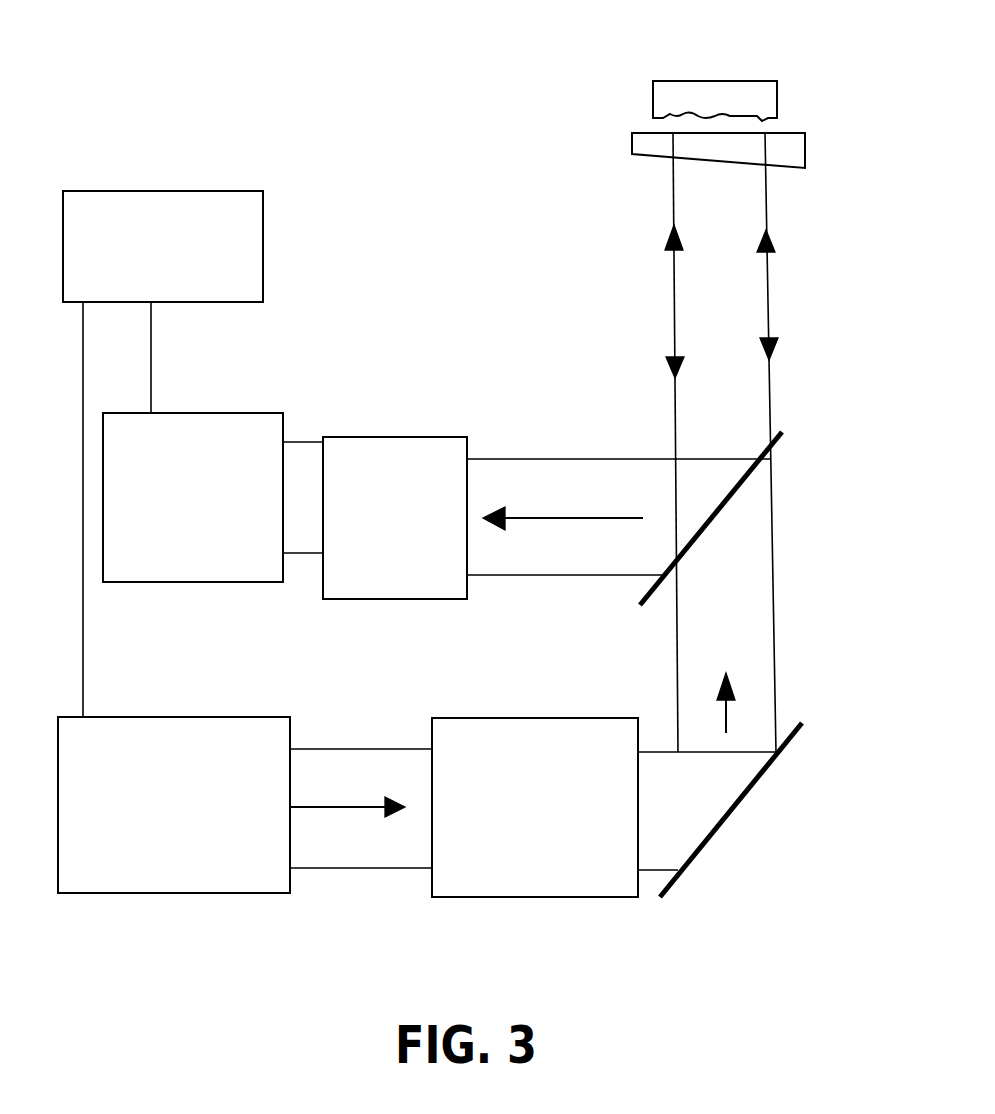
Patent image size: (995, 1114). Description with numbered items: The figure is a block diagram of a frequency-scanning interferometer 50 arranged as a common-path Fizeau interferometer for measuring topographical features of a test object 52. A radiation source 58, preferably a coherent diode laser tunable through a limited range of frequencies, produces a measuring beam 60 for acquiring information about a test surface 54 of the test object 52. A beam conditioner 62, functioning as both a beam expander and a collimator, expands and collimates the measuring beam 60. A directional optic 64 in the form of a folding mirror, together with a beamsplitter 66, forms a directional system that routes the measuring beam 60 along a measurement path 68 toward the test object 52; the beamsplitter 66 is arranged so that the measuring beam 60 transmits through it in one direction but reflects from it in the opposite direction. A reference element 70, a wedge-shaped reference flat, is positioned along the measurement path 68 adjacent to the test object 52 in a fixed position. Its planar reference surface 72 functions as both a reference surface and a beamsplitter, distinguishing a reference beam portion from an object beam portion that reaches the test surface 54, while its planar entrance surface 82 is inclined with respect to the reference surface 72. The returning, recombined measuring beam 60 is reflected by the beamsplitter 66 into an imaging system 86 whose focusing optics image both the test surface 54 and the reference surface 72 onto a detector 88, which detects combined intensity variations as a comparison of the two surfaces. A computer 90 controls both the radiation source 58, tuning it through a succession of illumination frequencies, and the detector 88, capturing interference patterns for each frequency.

The frequency-scanning interferometer 50 is at (240, 96).
The test object 52 is at (727, 92).
The test surface 54 is at (762, 120).
The radiation source 58 is at (174, 805).
The measuring beam 60 is at (315, 807).
The beam conditioner 62 is at (535, 807).
The directional optic 64 is at (728, 810).
The beamsplitter 66 is at (773, 443).
The measurement path 68 is at (721, 442).
The reference element 70 is at (790, 153).
The reference surface 72 is at (643, 133).
The entrance surface 82 is at (663, 157).
The imaging system 86 is at (395, 518).
The detector 88 is at (193, 497).
The computer 90 is at (163, 246).